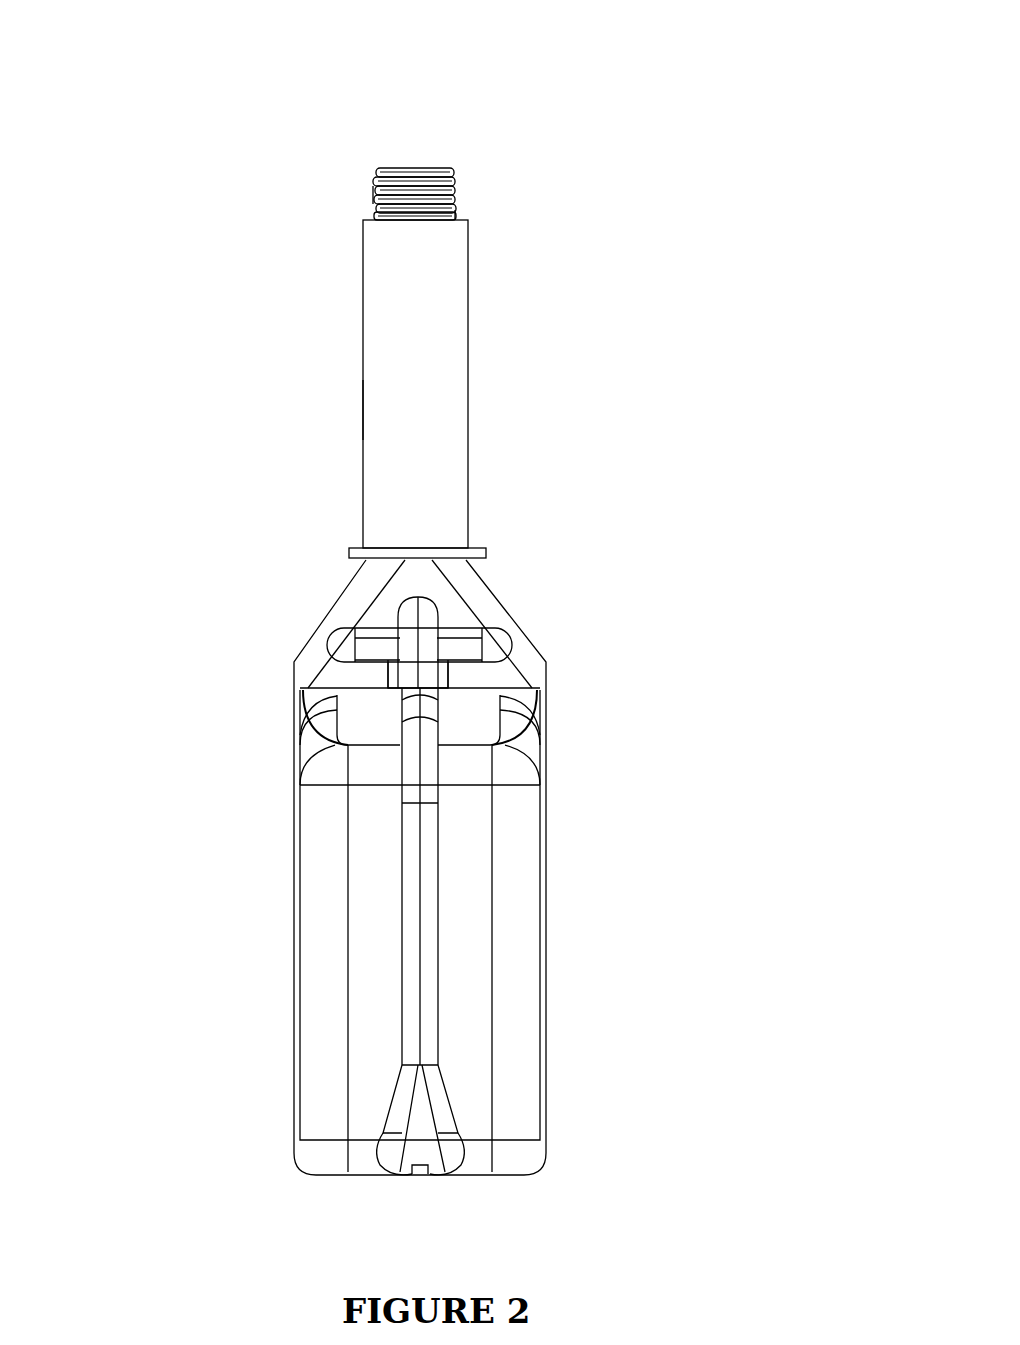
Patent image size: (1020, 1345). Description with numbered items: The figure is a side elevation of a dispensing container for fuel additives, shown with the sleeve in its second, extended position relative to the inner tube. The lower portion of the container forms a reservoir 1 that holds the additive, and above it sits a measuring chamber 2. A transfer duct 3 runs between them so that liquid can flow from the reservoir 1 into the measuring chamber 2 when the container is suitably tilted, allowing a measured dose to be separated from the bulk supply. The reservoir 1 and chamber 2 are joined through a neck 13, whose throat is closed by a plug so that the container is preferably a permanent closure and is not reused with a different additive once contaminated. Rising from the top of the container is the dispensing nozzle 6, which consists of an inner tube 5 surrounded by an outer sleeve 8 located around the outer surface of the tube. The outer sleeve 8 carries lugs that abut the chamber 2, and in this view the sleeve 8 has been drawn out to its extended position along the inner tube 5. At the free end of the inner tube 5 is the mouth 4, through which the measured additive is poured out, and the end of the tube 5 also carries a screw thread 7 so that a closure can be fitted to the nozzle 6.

The reservoir 1 is at (380, 975).
The measuring chamber 2 is at (452, 598).
The transfer duct 3 is at (422, 872).
The mouth 4 is at (418, 165).
The inner tube 5 is at (457, 215).
The dispensing nozzle 6 is at (530, 355).
The screw thread 7 is at (365, 196).
The outer sleeve 8 is at (425, 403).
The neck 13 is at (400, 677).